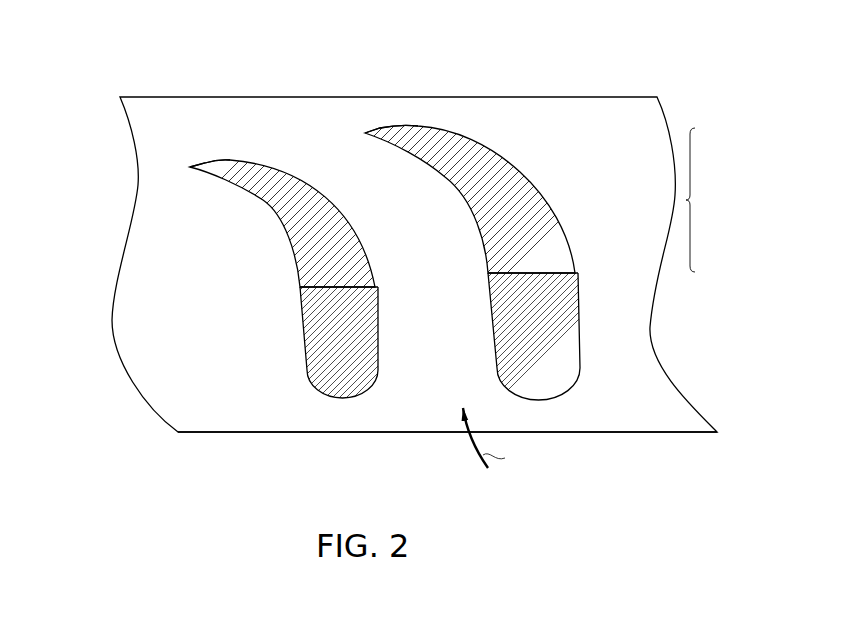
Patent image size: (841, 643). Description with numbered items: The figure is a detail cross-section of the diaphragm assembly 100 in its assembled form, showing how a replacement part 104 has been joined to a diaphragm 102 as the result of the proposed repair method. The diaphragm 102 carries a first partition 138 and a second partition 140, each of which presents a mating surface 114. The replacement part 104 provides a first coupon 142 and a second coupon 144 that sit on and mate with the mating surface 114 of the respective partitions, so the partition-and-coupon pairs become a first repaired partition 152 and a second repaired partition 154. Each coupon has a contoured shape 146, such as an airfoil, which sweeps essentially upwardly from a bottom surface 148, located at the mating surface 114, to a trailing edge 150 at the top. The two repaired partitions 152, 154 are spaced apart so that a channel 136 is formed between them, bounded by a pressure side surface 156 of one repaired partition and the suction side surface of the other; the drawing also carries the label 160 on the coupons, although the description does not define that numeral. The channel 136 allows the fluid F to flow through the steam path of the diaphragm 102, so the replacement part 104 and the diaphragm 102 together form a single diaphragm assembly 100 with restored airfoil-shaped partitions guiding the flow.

The diaphragm assembly 100 is at (382, 233).
The diaphragm 102 is at (242, 434).
The replacement part 104 is at (711, 200).
The mating surface 114 is at (313, 303).
The channel 136 is at (423, 408).
The first partition 138 is at (362, 352).
The second partition 140 is at (567, 352).
The first coupon 142 is at (297, 198).
The second coupon 144 is at (513, 205).
The contoured shape 146 is at (93, 227).
The bottom surface 148 is at (351, 278).
The trailing edge 150 is at (190, 166).
The first repaired partition 152 is at (390, 247).
The second repaired partition 154 is at (390, 244).
The pressure side surface 156 is at (240, 238).
The suction side 160 is at (351, 203).